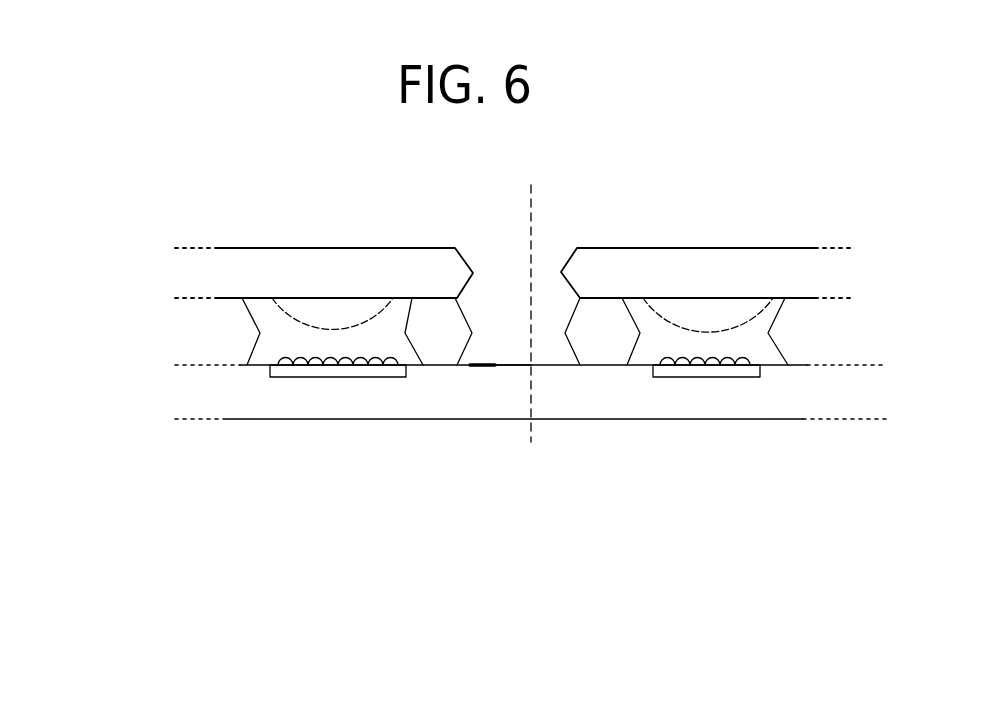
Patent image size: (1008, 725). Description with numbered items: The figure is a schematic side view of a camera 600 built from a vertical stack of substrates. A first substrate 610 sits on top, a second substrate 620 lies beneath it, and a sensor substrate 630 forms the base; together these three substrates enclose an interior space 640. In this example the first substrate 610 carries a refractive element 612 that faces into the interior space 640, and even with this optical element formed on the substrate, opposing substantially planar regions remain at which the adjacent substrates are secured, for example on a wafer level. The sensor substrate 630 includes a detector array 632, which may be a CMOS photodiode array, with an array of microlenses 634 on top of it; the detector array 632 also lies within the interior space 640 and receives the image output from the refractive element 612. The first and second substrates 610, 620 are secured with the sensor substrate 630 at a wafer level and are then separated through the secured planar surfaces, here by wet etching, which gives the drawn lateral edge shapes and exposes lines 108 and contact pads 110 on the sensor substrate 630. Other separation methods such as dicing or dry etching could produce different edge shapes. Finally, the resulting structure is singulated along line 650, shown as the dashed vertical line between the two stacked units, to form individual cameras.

The camera 600 is at (210, 191).
The first substrate 610 is at (167, 268).
The refractive element 612 is at (330, 306).
The second substrate 620 is at (182, 333).
The sensor substrate 630 is at (174, 395).
The detector array 632 is at (395, 378).
The array of microlenses 634 is at (317, 368).
The interior space 640 is at (310, 349).
The lines 108 is at (480, 365).
The contact pads 110 is at (508, 365).
The line 650 is at (544, 222).